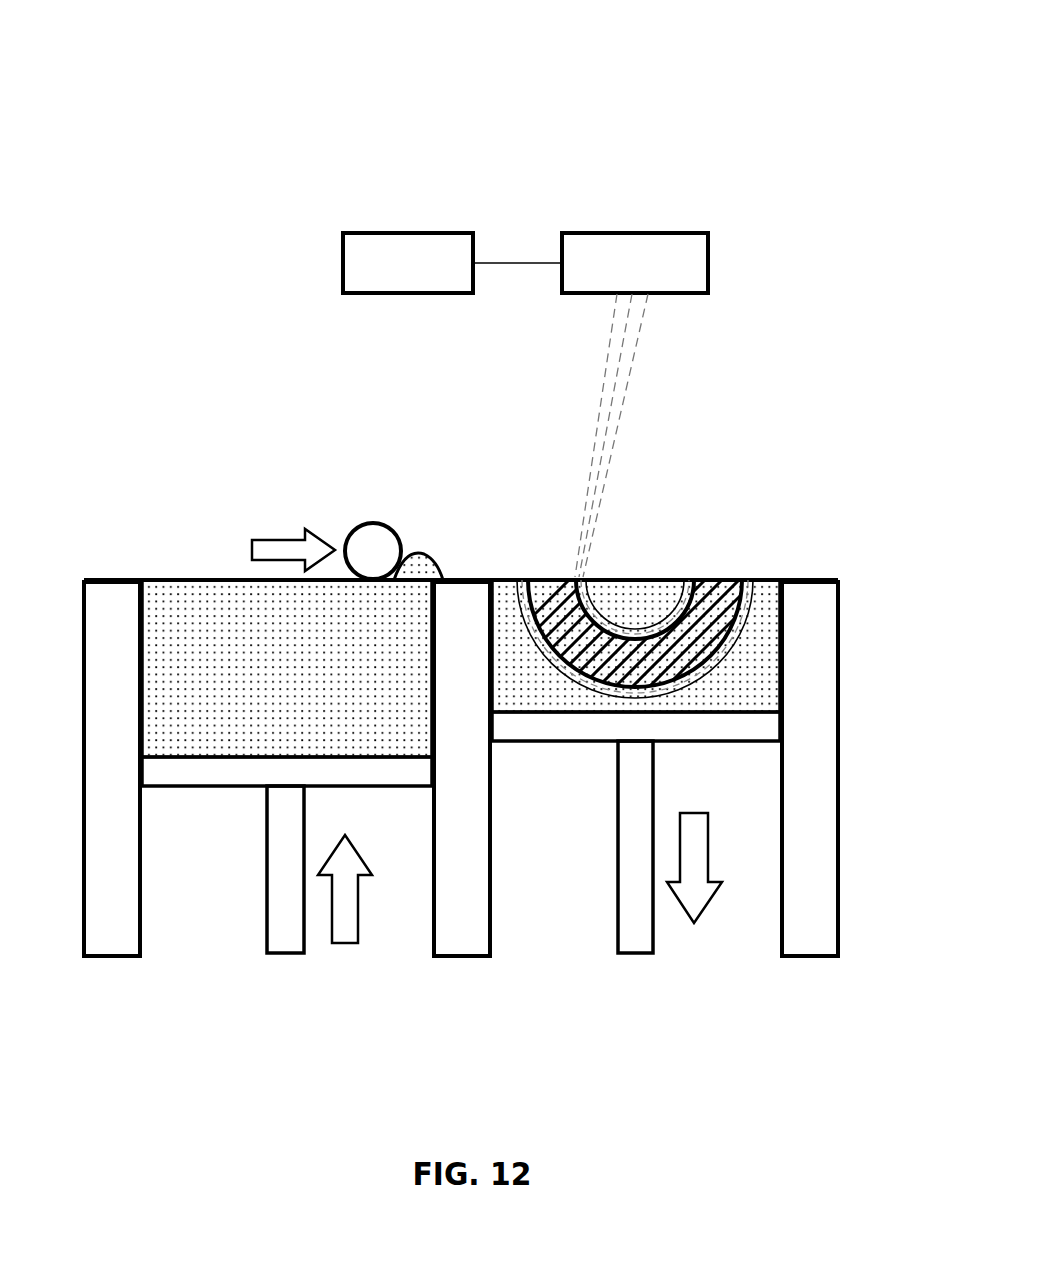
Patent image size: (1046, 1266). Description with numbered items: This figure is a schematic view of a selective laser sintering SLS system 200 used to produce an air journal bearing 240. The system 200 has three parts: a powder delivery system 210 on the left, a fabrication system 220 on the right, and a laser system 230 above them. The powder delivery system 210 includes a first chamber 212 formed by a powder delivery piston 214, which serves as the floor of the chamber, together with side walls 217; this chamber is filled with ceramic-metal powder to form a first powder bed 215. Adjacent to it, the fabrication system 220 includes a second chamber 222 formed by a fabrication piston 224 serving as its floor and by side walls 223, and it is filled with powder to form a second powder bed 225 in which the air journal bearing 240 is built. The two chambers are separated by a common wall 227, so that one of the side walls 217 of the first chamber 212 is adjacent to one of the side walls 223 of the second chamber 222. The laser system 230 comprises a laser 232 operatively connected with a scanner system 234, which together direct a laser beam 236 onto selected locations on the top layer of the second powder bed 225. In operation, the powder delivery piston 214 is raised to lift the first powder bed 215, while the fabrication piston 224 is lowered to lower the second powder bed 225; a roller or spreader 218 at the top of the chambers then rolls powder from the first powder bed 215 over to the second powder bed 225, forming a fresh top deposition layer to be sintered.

The SLS system 200 is at (145, 86).
The powder delivery system 210 is at (257, 1005).
The first chamber 212 is at (156, 430).
The powder delivery piston 214 is at (205, 787).
The first powder bed 215 is at (263, 679).
The side walls 217 is at (148, 592).
The roller or spreader 218 is at (362, 533).
The fabrication system 220 is at (666, 1005).
The second chamber 222 is at (777, 441).
The side walls 223 is at (500, 592).
The fabrication piston 224 is at (556, 733).
The second powder bed 225 is at (768, 592).
The common wall 227 is at (463, 947).
The laser system 230 is at (760, 231).
The laser 232 is at (383, 278).
The scanner system 234 is at (610, 278).
The laser beam 236 is at (627, 335).
The air journal bearing 240 is at (710, 587).